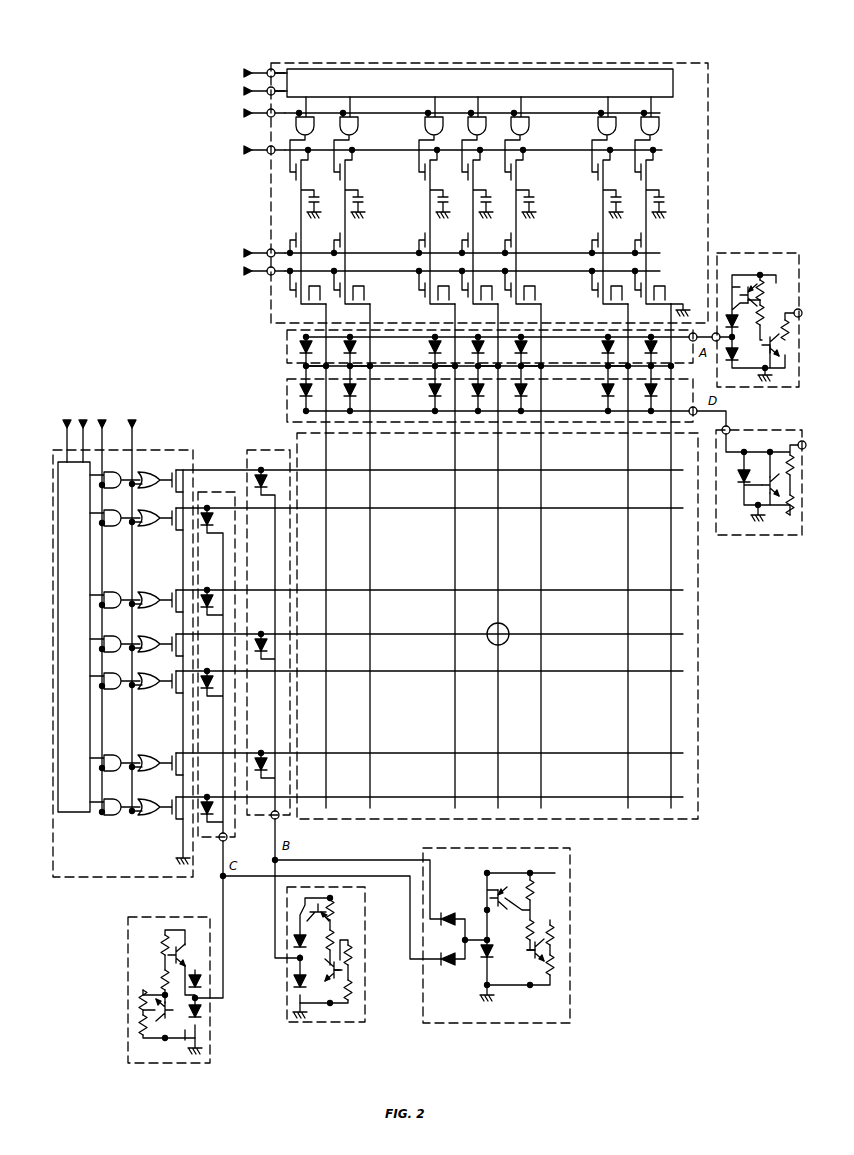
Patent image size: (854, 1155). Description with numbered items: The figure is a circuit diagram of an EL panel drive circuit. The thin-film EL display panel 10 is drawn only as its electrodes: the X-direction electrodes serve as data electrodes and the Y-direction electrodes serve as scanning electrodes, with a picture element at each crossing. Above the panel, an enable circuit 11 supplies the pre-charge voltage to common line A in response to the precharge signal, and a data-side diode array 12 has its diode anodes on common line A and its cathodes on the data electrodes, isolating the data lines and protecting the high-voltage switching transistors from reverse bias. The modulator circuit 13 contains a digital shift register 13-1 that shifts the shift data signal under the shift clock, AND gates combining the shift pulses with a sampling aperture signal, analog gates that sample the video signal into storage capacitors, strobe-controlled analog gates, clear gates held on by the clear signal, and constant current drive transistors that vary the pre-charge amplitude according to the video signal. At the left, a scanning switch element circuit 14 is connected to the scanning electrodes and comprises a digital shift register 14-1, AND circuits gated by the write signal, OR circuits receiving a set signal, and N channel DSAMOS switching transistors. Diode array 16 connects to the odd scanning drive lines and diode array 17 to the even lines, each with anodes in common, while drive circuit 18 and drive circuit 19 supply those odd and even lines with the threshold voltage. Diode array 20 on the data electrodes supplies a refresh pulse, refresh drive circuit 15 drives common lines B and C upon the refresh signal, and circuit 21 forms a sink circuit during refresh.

The thin-film EL display panel 10 is at (700, 812).
The enable circuit 11 is at (740, 268).
The diode array 12 is at (285, 345).
The modulator circuit 13 is at (708, 140).
The digital shift register 13-1 is at (655, 78).
The scanning switch element circuit 14 is at (123, 669).
The digital shift register 14-1 is at (72, 812).
The refresh drive circuit 15 is at (500, 1023).
The diode array 16 is at (265, 450).
The diode array 17 is at (216, 492).
The drive circuit 18 is at (322, 1022).
The drive circuit 19 is at (160, 1063).
The diode array 20 is at (285, 408).
The sink circuit 21 is at (766, 440).